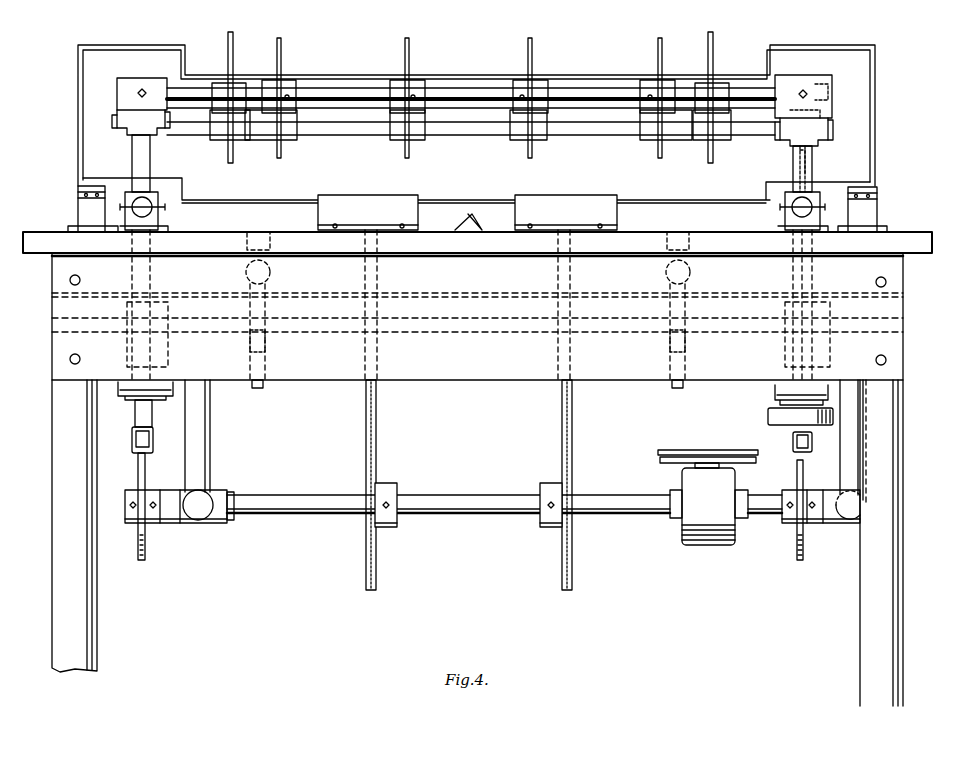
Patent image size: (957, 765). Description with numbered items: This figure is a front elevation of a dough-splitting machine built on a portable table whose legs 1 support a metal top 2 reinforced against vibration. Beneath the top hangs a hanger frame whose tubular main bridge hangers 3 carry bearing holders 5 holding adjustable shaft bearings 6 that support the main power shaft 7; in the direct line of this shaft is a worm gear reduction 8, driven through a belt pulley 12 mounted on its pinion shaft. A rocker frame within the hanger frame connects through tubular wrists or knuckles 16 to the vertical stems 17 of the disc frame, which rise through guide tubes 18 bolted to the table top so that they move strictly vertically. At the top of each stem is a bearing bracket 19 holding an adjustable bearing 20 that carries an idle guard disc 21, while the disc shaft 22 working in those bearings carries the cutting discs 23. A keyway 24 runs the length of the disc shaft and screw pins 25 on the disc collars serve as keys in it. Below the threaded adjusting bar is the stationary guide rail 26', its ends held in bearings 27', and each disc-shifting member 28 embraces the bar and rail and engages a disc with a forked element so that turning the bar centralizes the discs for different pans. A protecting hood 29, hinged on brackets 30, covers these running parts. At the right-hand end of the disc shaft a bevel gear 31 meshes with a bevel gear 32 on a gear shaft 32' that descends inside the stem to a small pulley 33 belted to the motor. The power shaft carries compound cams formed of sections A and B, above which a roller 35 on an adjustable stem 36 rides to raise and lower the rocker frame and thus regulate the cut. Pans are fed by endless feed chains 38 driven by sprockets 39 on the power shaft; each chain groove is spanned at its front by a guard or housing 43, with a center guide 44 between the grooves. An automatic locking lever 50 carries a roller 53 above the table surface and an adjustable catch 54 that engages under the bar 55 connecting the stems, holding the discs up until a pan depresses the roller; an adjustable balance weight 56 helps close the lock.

The legs 1 is at (60, 570).
The metal top 2 is at (45, 231).
The main bridge hangers 3 is at (212, 432).
The bearing holders 5 is at (218, 490).
The adjustable shaft bearings 6 is at (234, 495).
The main power shaft 7 is at (485, 494).
The worm gear reduction 8 is at (720, 546).
The belt pulley 12 is at (690, 450).
The tubular wrists or knuckles 16 is at (127, 400).
The vertical stems 17 is at (132, 158).
The guide tubes 18 is at (158, 198).
The bearing bracket 19 is at (117, 82).
The adjustable bearing 20 is at (190, 88).
The idle guard disc 21 is at (234, 38).
The disc shaft 22 is at (455, 90).
The cutting discs 23 is at (282, 58).
The keyway 24 is at (592, 95).
The screw pins 25 is at (620, 130).
The stationary guide rail 26' is at (471, 141).
The bearings 27' is at (474, 133).
The disc-shifting member 28 is at (218, 130).
The protecting hood 29 is at (95, 46).
The brackets 30 is at (880, 209).
The bevel gear 31 is at (830, 90).
The bevel gear 32 is at (828, 119).
The gear shaft 32' is at (830, 163).
The small pulley 33 is at (768, 420).
The roller 35 is at (153, 442).
The stem 36 is at (152, 416).
The endless feed chains 38 is at (366, 433).
The driving sprockets 39 is at (382, 483).
The guard or housing 43 is at (370, 195).
The center guide 44 is at (478, 214).
The lever 50 is at (270, 309).
The roller 53 is at (258, 231).
The adjustable catch 54 is at (272, 349).
The bar 55 is at (482, 334).
The adjustable balance weight 56 is at (272, 272).
The cam section A is at (146, 552).
The cam section B is at (138, 469).